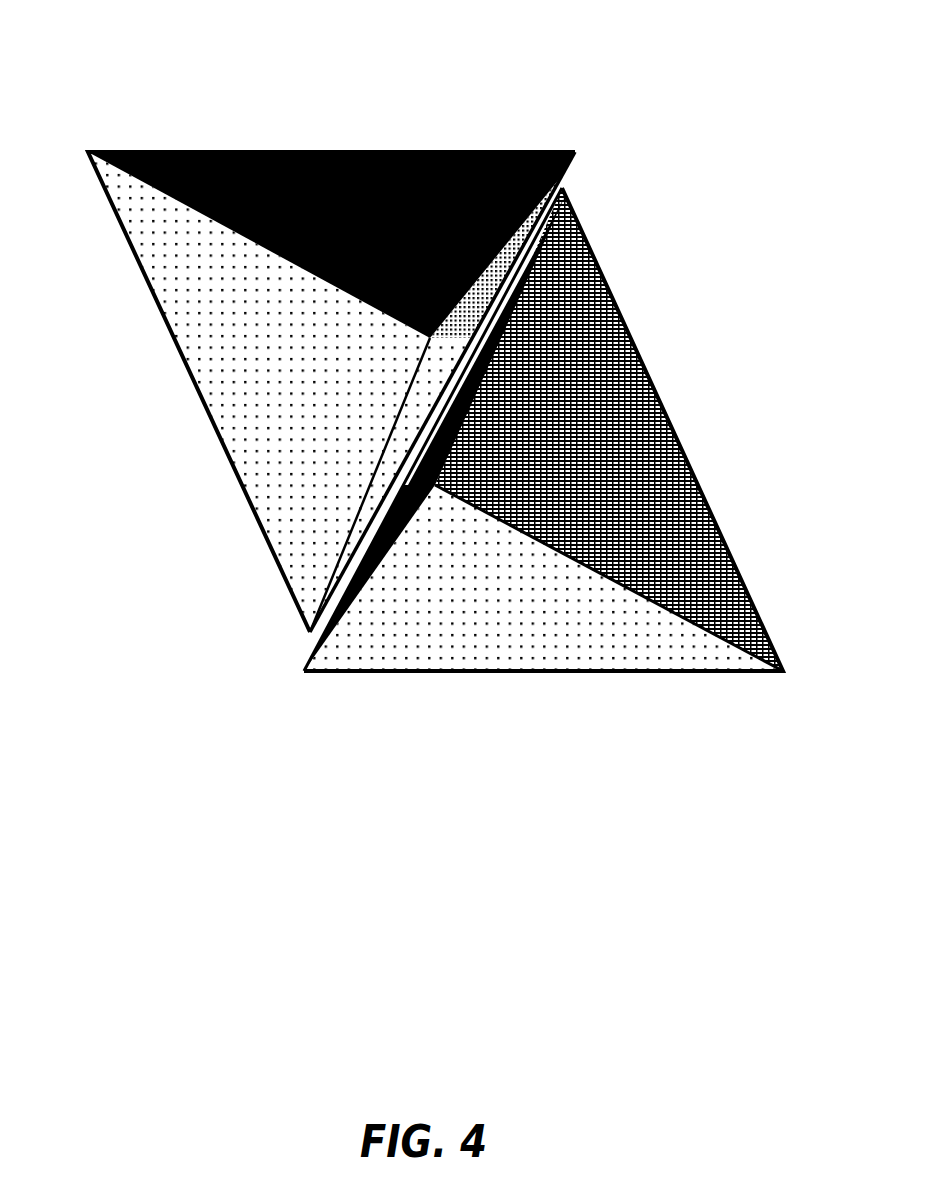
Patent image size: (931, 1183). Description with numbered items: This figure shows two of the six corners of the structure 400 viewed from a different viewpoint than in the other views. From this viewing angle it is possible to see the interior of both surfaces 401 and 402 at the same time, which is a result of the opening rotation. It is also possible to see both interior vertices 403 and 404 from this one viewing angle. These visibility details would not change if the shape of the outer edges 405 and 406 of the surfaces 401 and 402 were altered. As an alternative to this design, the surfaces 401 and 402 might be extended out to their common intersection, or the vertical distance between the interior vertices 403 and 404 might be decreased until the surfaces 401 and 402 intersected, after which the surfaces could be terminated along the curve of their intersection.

The tetrahedral structure 400 is at (277, 67).
The surface 401 is at (433, 376).
The surface 402 is at (427, 497).
The interior vertex 403 is at (498, 150).
The interior vertex 404 is at (432, 492).
The outer edge 405 is at (430, 415).
The outer edge 406 is at (495, 355).